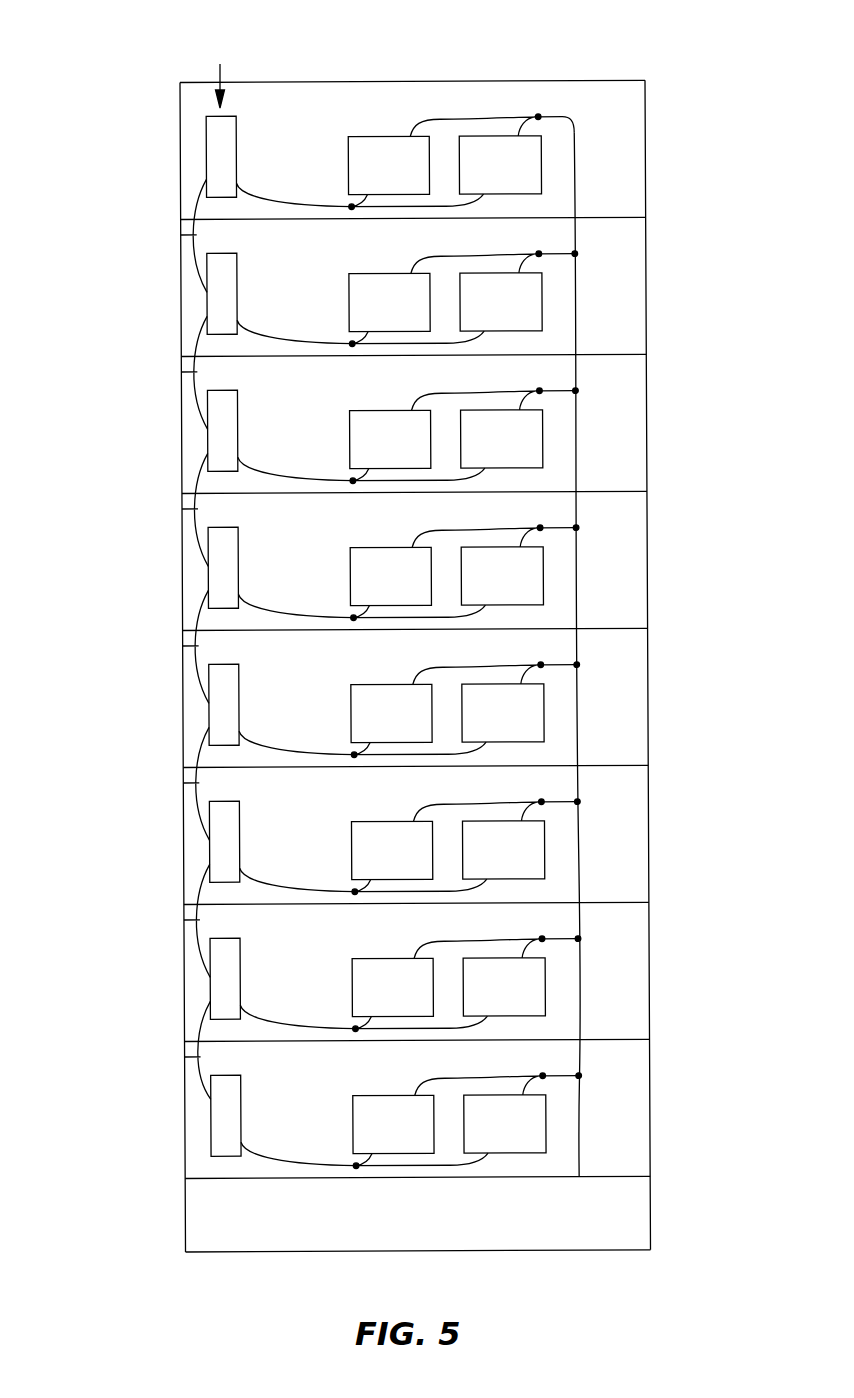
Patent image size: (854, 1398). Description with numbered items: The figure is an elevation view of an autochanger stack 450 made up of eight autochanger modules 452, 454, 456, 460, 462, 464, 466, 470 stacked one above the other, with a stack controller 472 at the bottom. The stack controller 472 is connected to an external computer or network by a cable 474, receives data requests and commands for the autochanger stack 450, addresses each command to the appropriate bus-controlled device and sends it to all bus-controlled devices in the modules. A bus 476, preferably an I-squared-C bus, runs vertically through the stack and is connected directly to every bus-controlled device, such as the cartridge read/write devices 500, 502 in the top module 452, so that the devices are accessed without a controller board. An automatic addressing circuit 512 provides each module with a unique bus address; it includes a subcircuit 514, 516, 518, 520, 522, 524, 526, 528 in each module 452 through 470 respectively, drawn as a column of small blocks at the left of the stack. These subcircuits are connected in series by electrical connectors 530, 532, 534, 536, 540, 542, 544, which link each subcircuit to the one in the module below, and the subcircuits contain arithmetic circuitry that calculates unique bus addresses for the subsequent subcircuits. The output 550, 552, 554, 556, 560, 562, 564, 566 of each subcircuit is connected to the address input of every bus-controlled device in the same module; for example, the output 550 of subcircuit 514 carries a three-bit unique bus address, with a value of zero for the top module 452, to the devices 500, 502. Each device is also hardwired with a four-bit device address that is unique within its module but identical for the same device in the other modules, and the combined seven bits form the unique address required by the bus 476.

The autochanger stack 450 is at (664, 42).
The autochanger module 452 is at (645, 154).
The autochanger module 454 is at (453, 255).
The autochanger module 456 is at (453, 392).
The autochanger module 460 is at (454, 529).
The autochanger module 462 is at (455, 666).
The autochanger module 464 is at (455, 803).
The autochanger module 466 is at (456, 940).
The autochanger module 470 is at (457, 1077).
The stack controller 472 is at (645, 1214).
The cable 474 is at (180, 1225).
The bus 476 is at (576, 1112).
The cartridge read/write device 500 is at (393, 138).
The cartridge read/write device 502 is at (498, 138).
The automatic addressing circuit 512 is at (221, 73).
The subcircuit 514 is at (206, 158).
The subcircuit 516 is at (170, 294).
The subcircuit 518 is at (170, 431).
The subcircuit 520 is at (171, 568).
The subcircuit 522 is at (172, 705).
The subcircuit 524 is at (172, 842).
The subcircuit 526 is at (173, 979).
The subcircuit 528 is at (174, 1116).
The electrical connector 530 is at (181, 232).
The electrical connector 532 is at (159, 372).
The electrical connector 534 is at (160, 509).
The electrical connector 536 is at (160, 646).
The electrical connector 540 is at (161, 783).
The electrical connector 542 is at (162, 920).
The electrical connector 544 is at (162, 1050).
The subcircuit output 550 is at (256, 198).
The subcircuit output 552 is at (407, 299).
The subcircuit output 554 is at (407, 436).
The subcircuit output 556 is at (408, 573).
The subcircuit output 560 is at (409, 710).
The subcircuit output 562 is at (409, 847).
The subcircuit output 564 is at (410, 984).
The subcircuit output 566 is at (411, 1121).